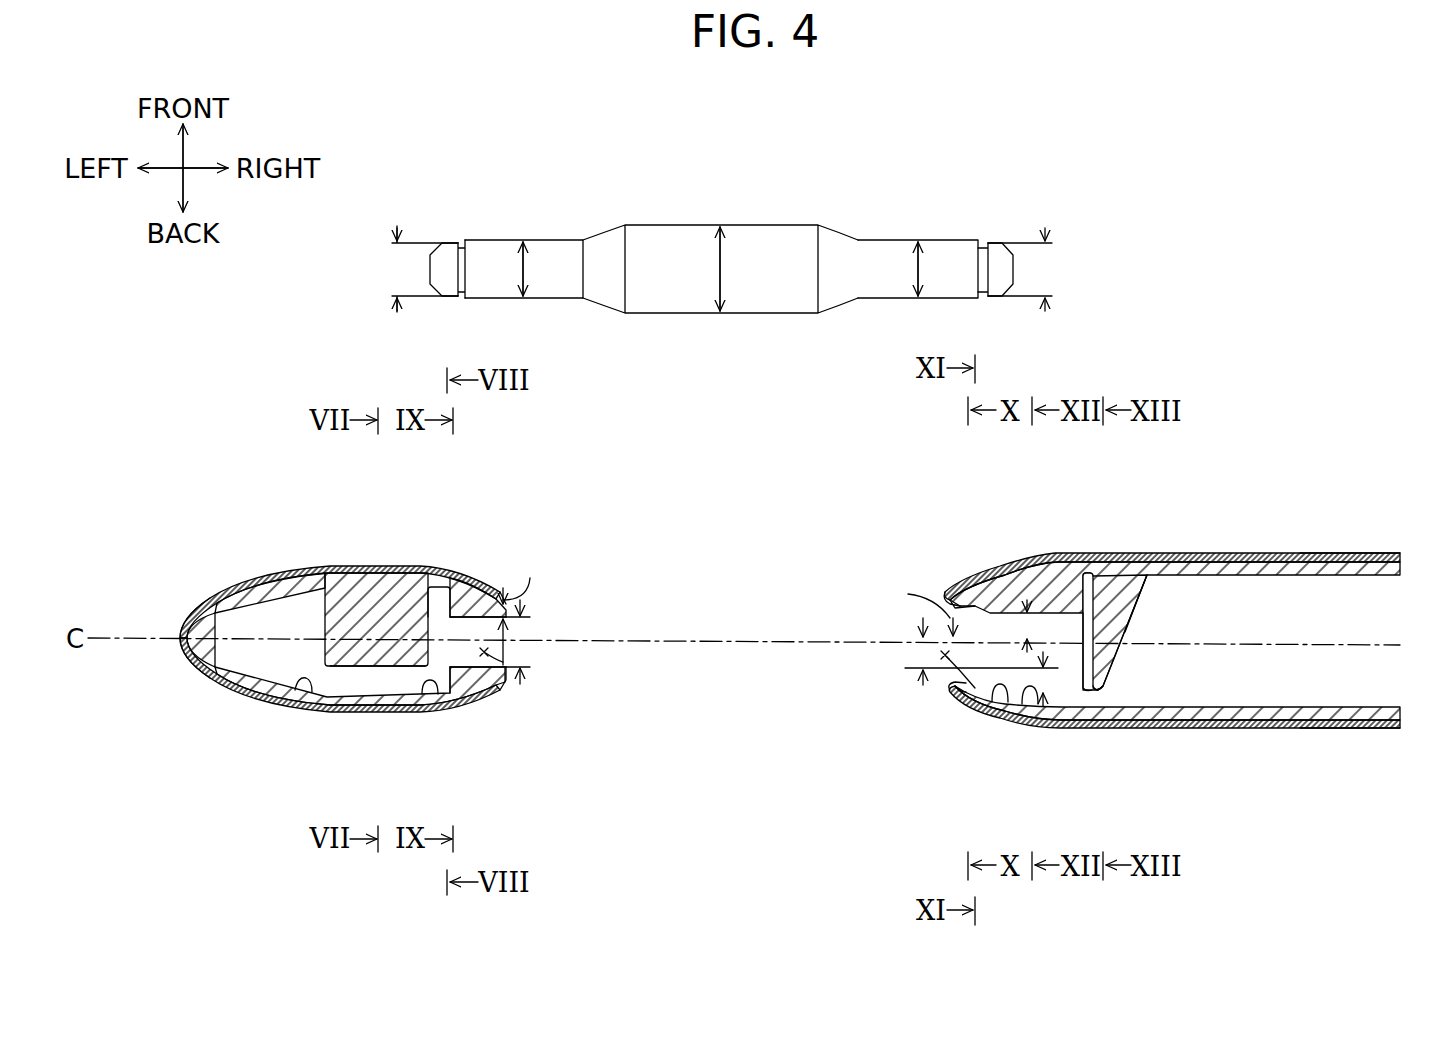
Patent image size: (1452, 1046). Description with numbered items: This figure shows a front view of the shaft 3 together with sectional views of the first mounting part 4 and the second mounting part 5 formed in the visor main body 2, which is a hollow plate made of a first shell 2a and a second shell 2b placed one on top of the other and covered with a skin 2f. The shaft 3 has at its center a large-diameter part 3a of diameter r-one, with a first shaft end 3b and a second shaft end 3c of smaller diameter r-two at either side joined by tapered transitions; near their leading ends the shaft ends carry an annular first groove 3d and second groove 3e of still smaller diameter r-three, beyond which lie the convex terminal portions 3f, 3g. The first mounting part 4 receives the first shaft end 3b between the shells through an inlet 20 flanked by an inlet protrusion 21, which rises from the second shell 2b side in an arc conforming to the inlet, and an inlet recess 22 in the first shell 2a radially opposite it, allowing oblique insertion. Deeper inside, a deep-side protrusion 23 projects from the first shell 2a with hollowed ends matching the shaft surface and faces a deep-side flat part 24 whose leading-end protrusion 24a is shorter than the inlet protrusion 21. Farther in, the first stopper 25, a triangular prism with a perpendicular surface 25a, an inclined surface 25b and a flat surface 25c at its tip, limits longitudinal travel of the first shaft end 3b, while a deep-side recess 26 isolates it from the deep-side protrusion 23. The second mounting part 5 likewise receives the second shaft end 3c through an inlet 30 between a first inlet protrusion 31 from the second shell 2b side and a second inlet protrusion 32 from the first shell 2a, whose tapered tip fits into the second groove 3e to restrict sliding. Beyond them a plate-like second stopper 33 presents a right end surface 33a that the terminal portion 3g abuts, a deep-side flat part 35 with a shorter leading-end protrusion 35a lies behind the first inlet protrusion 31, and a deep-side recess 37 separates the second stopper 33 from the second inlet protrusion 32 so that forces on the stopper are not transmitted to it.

The visor main body 2 is at (1323, 545).
The first shell 2a is at (225, 590).
The second shell 2b is at (255, 692).
The skin 2f is at (200, 680).
The shaft 3 is at (719, 214).
The large-diameter part 3a is at (755, 245).
The first shaft end 3b is at (880, 250).
The second shaft end 3c is at (545, 250).
The first groove 3d is at (982, 255).
The second groove 3e is at (462, 252).
The terminal portion 3f is at (1003, 255).
The terminal portion 3g is at (445, 250).
The first mounting part 4 is at (1136, 632).
The second mounting part 5 is at (778, 643).
The inlet 20 is at (945, 686).
The inlet protrusion 21 is at (965, 706).
The inlet recess 22 is at (958, 586).
The deep-side protrusion 23 is at (1050, 588).
The deep-side flat part 24 is at (1033, 706).
The leading-end protrusion 24a is at (1000, 705).
The first stopper 25 is at (1165, 572).
The perpendicular surface 25a is at (1086, 705).
The inclined surface 25b is at (1150, 682).
The flat surface 25c is at (1105, 712).
The deep-side recess 26 is at (1095, 596).
The inlet 30 is at (490, 672).
The first inlet protrusion 31 is at (467, 692).
The second inlet protrusion 32 is at (470, 600).
The second stopper 33 is at (375, 600).
The right end surface 33a is at (400, 668).
The deep-side flat part 35 is at (310, 692).
The leading-end protrusion 35a is at (430, 695).
The deep-side recess 37 is at (416, 610).